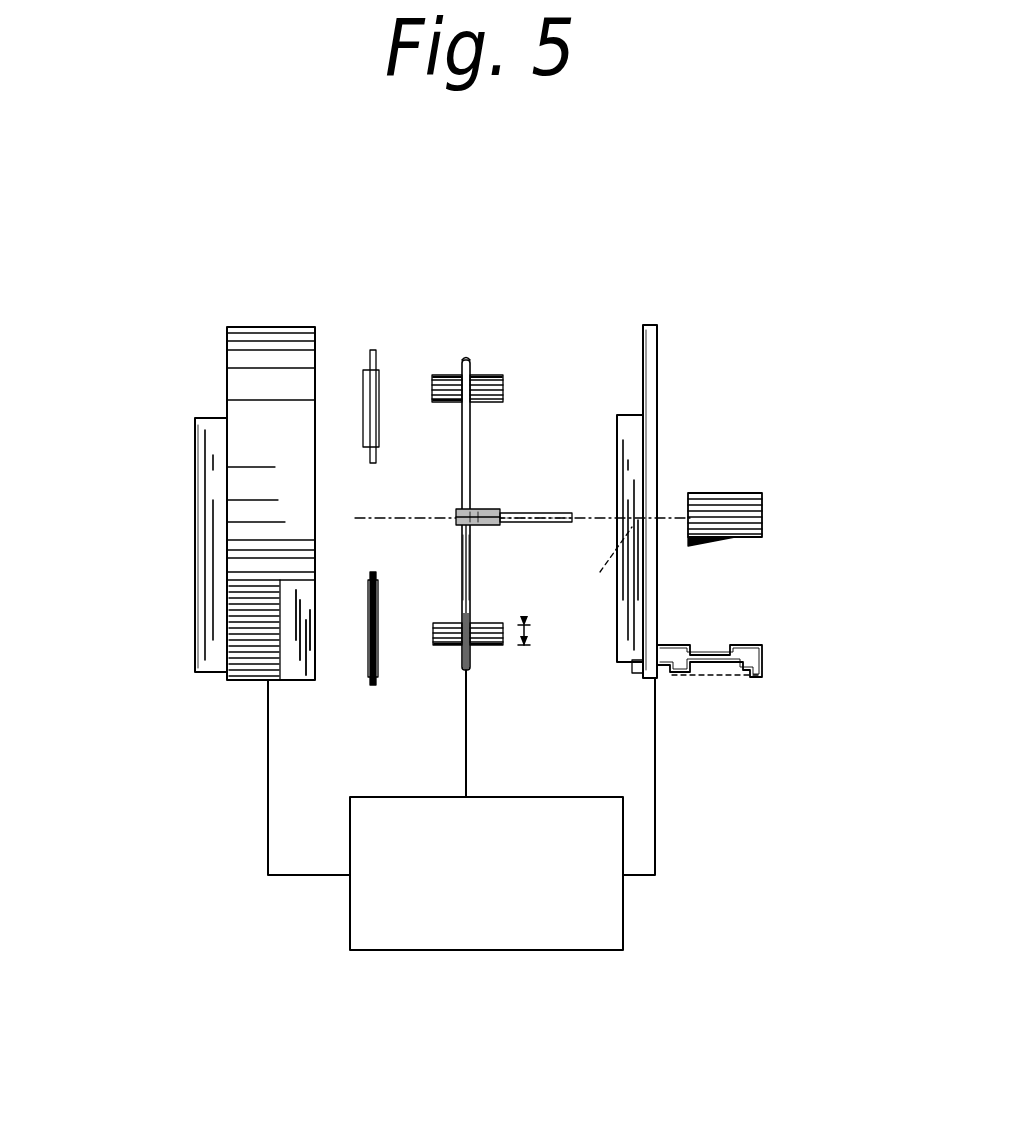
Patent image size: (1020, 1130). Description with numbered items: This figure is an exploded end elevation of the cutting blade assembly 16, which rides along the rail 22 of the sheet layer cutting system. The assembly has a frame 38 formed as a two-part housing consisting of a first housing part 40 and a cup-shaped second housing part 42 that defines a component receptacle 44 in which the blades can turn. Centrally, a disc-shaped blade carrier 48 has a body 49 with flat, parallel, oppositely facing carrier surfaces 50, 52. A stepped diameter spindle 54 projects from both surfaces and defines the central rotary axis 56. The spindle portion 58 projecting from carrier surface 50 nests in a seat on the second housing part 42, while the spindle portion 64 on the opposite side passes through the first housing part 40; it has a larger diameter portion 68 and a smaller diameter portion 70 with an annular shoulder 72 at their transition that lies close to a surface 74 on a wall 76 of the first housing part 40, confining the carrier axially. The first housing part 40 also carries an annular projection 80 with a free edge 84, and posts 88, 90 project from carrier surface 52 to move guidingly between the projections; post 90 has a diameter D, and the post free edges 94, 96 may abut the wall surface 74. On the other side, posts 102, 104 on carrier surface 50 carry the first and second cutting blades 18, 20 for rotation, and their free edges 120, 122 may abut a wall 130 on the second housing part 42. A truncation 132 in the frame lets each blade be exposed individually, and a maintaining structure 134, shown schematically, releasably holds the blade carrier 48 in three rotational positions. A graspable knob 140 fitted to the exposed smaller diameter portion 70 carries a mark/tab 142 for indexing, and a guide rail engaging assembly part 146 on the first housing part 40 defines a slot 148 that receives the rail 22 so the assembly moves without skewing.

The cutting blade assembly 16 is at (566, 275).
The first cutting blade 18 is at (365, 405).
The second cutting blade 20 is at (370, 565).
The rail 22 is at (692, 668).
The frame 38 is at (270, 327).
The first housing part 40 is at (658, 600).
The second housing part 42 is at (195, 577).
The component receptacle 44 is at (258, 482).
The blade carrier 48 is at (469, 432).
The body 49 is at (470, 488).
The carrier surface 50 is at (450, 375).
The carrier surface 52 is at (469, 362).
The spindle 54 is at (545, 512).
The rotary axis 56 is at (375, 517).
The spindle portion 58 is at (461, 535).
The spindle portion 64 is at (479, 530).
The larger diameter portion 68 is at (485, 508).
The smaller diameter portion 70 is at (547, 524).
The annular shoulder 72 is at (492, 527).
The wall surface 74 is at (600, 572).
The wall 76 is at (660, 440).
The second annular projection 80 is at (640, 672).
The free edge 84 is at (617, 656).
The post 88 is at (487, 375).
The post 90 is at (487, 648).
The free edge 94 is at (505, 380).
The free edge 96 is at (503, 646).
The post 102 is at (437, 378).
The post 104 is at (443, 648).
The free edge 120 is at (441, 401).
The free edge 122 is at (441, 640).
The wall 130 is at (195, 478).
The truncation 132 is at (245, 684).
The maintaining structure 134 is at (502, 915).
The knob 140 is at (755, 510).
The mark/tab 142 is at (710, 540).
The guide rail engaging assembly part 146 is at (765, 660).
The slot 148 is at (732, 657).
The diameter D is at (533, 635).